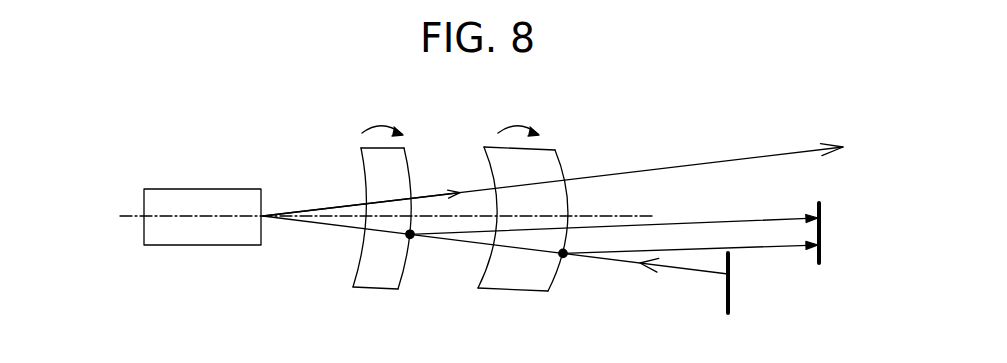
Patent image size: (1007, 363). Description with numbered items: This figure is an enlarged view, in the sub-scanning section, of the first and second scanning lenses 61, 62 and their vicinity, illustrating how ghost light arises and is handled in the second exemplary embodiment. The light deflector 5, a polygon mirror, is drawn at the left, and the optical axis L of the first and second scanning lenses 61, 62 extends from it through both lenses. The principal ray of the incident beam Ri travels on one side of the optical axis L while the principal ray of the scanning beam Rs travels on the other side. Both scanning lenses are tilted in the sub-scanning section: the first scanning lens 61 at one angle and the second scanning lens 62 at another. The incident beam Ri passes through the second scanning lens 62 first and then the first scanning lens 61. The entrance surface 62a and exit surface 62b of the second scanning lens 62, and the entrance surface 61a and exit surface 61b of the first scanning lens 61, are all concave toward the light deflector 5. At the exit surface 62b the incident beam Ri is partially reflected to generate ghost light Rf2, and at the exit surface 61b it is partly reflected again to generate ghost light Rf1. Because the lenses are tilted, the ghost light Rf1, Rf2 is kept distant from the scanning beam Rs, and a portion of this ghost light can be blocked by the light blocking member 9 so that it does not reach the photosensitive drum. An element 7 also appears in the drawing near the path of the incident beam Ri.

The light deflector 5 is at (227, 195).
The first scanning lens 61 is at (377, 231).
The entrance surface of first scanning lens 61a is at (355, 278).
The exit surface of first scanning lens 61b is at (407, 272).
The second scanning lens 62 is at (537, 240).
The entrance surface of second scanning lens 62a is at (483, 270).
The exit surface of second scanning lens 62b is at (560, 270).
The reflecting member 7 is at (730, 297).
The light blocking member 9 is at (822, 250).
The optical axis L is at (330, 222).
The scanning beam Rs is at (742, 158).
The incident beam Ri is at (627, 267).
The ghost light Rf1 is at (758, 218).
The ghost light Rf2 is at (763, 247).